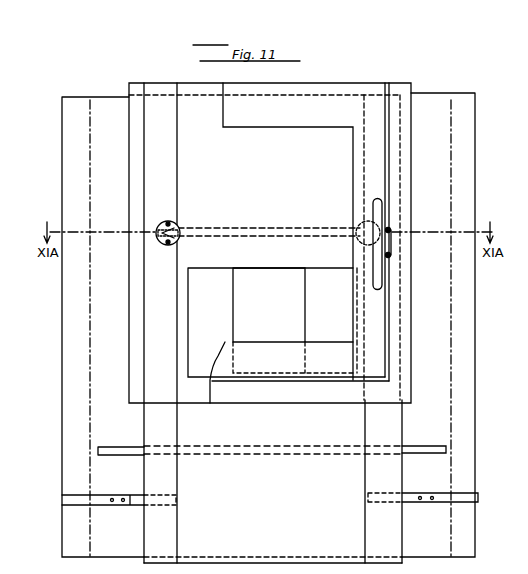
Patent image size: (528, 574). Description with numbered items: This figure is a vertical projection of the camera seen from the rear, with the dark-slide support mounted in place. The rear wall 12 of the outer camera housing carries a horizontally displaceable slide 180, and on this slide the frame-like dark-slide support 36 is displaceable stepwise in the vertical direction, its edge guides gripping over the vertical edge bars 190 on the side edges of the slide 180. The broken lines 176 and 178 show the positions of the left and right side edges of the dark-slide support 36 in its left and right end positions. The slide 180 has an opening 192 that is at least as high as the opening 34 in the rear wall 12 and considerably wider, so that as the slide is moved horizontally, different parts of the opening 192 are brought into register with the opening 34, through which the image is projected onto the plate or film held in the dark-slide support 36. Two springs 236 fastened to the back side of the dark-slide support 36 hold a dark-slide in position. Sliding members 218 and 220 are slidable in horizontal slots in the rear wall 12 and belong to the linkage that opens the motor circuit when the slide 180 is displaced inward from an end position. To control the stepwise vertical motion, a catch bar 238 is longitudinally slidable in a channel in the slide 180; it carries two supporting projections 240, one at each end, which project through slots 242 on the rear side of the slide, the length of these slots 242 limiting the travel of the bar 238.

The rear wall 12 is at (473, 176).
The opening 34 is at (274, 282).
The dark-slide support 36 is at (373, 103).
The broken line 176 is at (93, 431).
The broken line 178 is at (452, 422).
The slide 180 is at (333, 555).
The vertical edge bars 190 is at (151, 522).
The opening 192 is at (216, 270).
The sliding member 218 is at (469, 493).
The sliding member 220 is at (66, 497).
The springs 236 is at (383, 274).
The catch bar 238 is at (251, 228).
The supporting projections 240 is at (176, 224).
The slots 242 is at (178, 238).